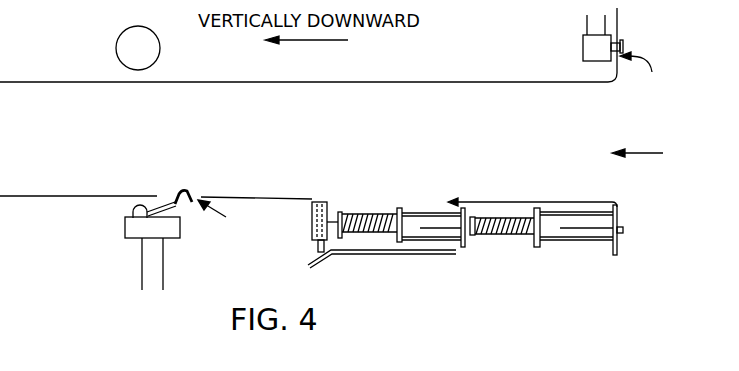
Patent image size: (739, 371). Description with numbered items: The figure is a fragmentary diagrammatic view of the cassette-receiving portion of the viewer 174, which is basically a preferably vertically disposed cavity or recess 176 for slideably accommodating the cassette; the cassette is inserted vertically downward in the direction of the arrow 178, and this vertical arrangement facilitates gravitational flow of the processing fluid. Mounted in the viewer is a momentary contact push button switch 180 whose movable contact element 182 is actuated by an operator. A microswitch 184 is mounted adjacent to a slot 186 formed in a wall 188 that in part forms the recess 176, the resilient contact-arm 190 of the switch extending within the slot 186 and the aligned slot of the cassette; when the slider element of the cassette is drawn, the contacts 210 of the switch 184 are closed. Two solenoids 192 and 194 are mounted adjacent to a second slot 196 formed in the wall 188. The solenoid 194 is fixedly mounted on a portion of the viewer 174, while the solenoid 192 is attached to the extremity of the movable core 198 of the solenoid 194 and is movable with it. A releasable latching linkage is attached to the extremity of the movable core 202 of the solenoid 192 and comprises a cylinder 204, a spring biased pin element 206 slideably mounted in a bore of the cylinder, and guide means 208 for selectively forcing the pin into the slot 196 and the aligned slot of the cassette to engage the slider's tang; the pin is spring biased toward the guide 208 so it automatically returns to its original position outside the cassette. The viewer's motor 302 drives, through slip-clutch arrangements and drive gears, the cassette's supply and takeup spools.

The motor 302 is at (116, 52).
The arrow 178 is at (294, 40).
The momentary contact push button switch 180 is at (583, 48).
The movable contact element 182 is at (622, 41).
The viewer 174 is at (336, 49).
The recess 176 is at (655, 154).
The wall 188 is at (87, 196).
The resilient contact-arm 190 is at (183, 176).
The slot 186 is at (230, 217).
The microswitch 184 is at (125, 222).
The contacts 210 is at (178, 214).
The cylinder 204 is at (312, 226).
The spring biased pin element 206 is at (318, 246).
The guide means 208 is at (341, 258).
The movable core 202 is at (355, 238).
The solenoid 192 is at (427, 235).
The second slot 196 is at (446, 202).
The movable core 198 is at (488, 236).
The solenoid 194 is at (562, 240).